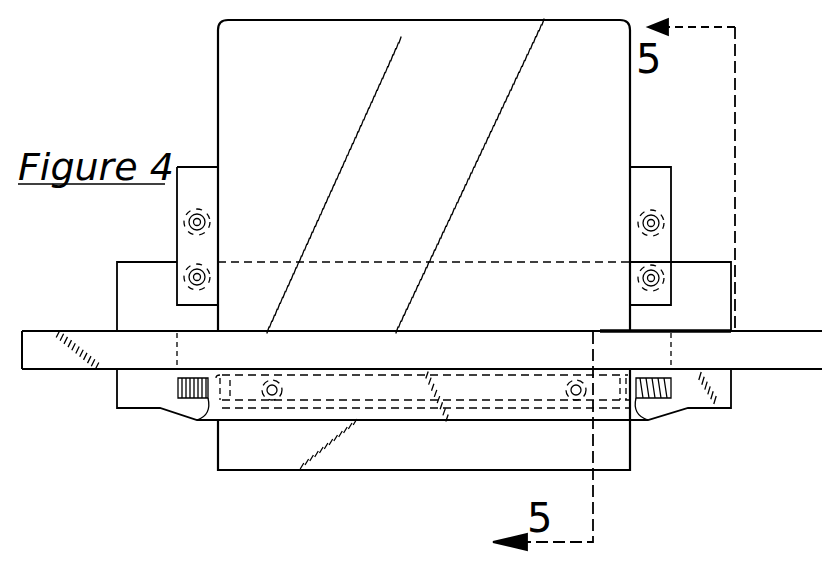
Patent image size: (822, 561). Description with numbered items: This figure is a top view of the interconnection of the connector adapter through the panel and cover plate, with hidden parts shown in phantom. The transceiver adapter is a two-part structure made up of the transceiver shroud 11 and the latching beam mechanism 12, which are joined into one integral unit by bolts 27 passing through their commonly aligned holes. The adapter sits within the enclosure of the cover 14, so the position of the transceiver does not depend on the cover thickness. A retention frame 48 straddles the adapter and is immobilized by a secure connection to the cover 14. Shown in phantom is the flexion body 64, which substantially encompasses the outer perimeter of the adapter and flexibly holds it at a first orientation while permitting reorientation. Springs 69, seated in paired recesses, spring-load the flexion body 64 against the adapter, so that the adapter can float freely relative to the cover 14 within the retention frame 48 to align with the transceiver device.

The transceiver shroud 11 is at (630, 118).
The latching beam mechanism 12 is at (731, 318).
The cover 14 is at (36, 370).
The bolts 27 is at (194, 272).
The retention frame 48 is at (731, 282).
The flexion body 64 is at (520, 392).
The springs 69 is at (196, 423).